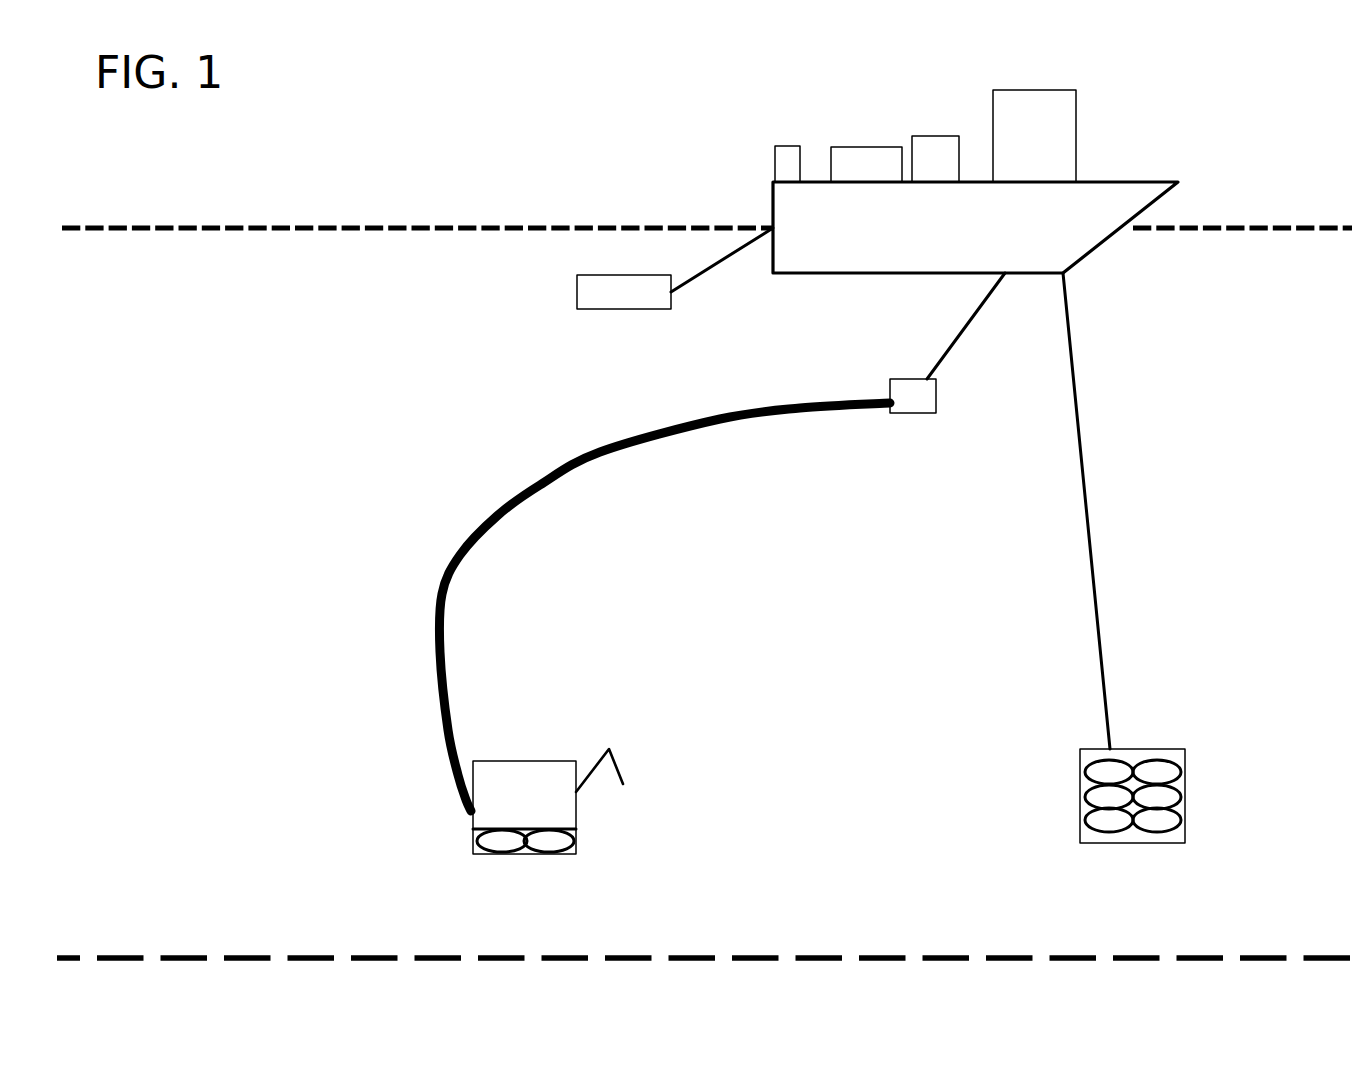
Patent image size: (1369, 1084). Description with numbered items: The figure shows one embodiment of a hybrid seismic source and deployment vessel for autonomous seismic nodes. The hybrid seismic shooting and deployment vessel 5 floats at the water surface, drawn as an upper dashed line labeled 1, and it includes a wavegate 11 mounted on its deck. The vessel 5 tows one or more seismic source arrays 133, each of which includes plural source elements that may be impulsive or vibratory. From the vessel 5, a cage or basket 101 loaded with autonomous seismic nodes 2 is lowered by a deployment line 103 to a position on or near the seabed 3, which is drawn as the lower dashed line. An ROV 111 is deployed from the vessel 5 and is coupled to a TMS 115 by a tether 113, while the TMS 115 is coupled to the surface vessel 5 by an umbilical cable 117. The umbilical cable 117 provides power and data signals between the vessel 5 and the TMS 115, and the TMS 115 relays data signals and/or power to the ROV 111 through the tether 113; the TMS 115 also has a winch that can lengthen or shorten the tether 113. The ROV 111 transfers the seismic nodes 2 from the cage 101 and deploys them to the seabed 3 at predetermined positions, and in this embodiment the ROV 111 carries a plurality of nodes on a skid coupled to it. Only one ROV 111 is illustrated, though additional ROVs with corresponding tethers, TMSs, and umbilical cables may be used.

The water surface 1 is at (120, 232).
The autonomous seismic nodes 2 is at (1160, 770).
The seabed 3 is at (1237, 957).
The hybrid seismic shooting and deployment vessel 5 is at (1153, 182).
The wavegate 11 is at (788, 145).
The cage or basket 101 is at (1095, 794).
The deployment line 103 is at (1077, 413).
The ROV 111 is at (497, 811).
The tether 113 is at (493, 518).
The TMS 115 is at (912, 420).
The umbilical cable 117 is at (927, 367).
The seismic source arrays 133 is at (618, 315).